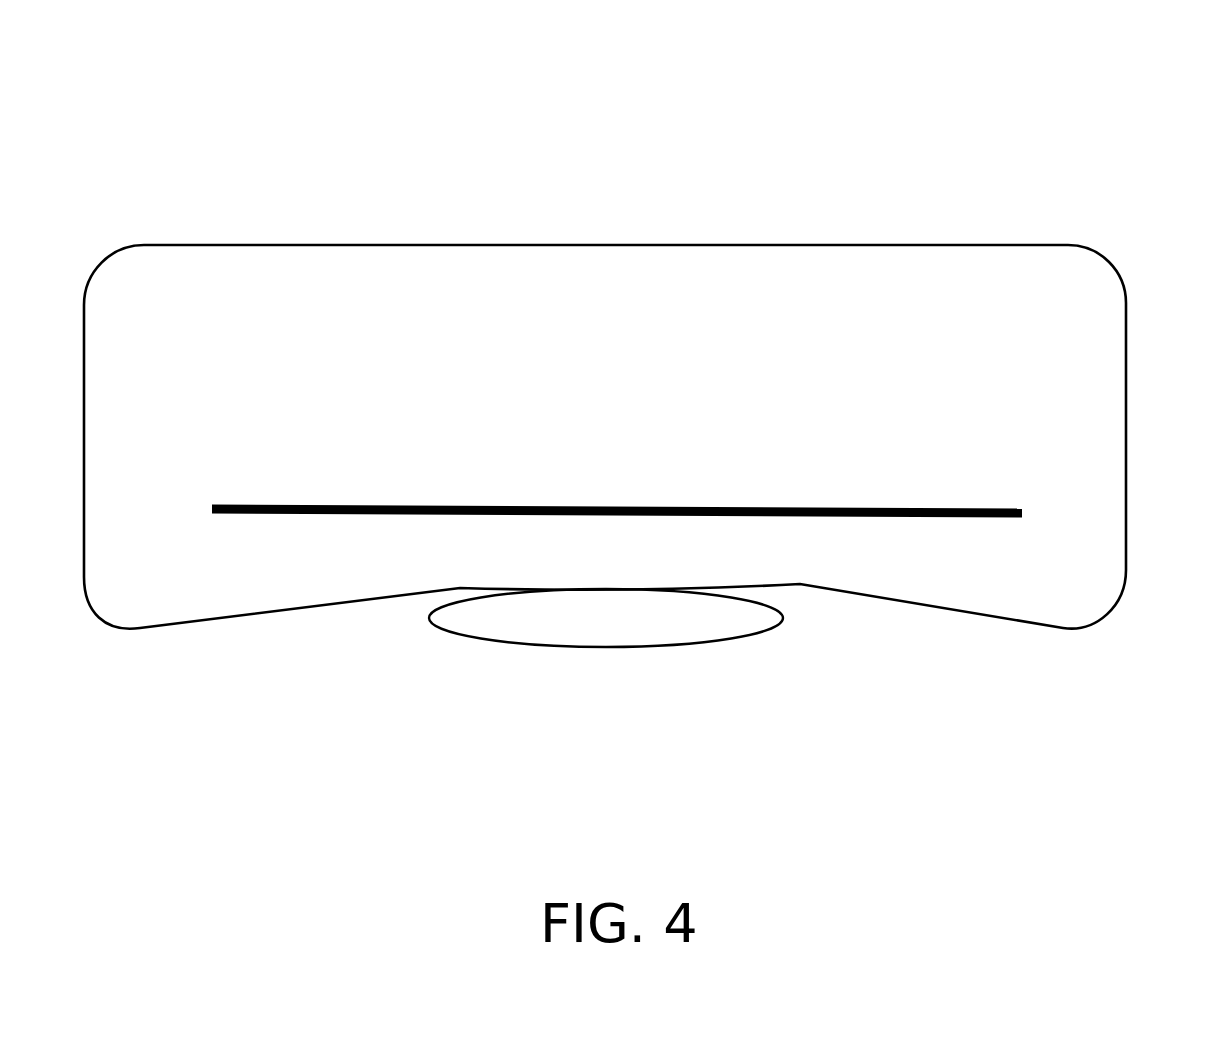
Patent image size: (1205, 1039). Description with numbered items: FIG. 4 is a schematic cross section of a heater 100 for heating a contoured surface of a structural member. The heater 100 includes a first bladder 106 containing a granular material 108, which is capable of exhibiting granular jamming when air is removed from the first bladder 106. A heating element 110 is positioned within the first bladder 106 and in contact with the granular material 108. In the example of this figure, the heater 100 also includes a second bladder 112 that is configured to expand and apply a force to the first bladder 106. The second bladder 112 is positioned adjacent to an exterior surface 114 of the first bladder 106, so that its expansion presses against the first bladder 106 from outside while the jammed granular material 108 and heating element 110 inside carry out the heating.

The heater 100 is at (1064, 76).
The first bladder 106 is at (1011, 246).
The granular material 108 is at (1006, 430).
The heating element 110 is at (713, 507).
The second bladder 112 is at (762, 628).
The exterior surface 114 is at (384, 632).